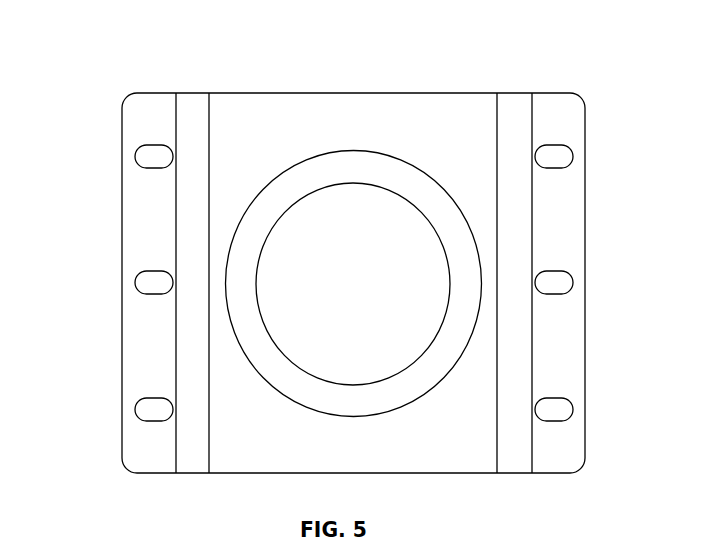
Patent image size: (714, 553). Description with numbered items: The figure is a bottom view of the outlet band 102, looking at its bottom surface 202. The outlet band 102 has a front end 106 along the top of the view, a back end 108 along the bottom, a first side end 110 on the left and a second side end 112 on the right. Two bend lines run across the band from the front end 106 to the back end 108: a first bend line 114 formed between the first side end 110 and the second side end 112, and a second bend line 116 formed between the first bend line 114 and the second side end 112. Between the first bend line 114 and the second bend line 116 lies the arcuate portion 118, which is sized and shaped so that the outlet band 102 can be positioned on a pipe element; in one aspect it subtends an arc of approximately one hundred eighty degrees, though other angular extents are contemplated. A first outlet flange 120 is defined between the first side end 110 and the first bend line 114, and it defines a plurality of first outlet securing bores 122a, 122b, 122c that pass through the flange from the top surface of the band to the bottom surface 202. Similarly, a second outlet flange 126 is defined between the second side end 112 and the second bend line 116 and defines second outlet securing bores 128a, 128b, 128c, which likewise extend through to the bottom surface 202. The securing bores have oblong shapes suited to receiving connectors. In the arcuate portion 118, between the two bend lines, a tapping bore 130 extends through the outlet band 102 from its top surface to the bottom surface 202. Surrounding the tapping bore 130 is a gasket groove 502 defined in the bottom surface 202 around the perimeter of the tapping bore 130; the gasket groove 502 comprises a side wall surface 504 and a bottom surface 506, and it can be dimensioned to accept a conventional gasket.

The outlet band 102 is at (188, 46).
The front end 106 is at (259, 93).
The back end 108 is at (450, 473).
The first side end 110 is at (122, 243).
The second side end 112 is at (585, 205).
The first bend line 114 is at (198, 110).
The second bend line 116 is at (508, 110).
The arcuate portion 118 is at (445, 93).
The first outlet flange 120 is at (130, 198).
The first outlet securing bore 122a is at (135, 153).
The first outlet securing bore 122b is at (135, 280).
The first outlet securing bore 122c is at (135, 408).
The second outlet flange 126 is at (577, 340).
The second outlet securing bore 128a is at (573, 155).
The second outlet securing bore 128b is at (573, 282).
The second outlet securing bore 128c is at (573, 408).
The tapping bore 130 is at (395, 375).
The bottom surface 202 is at (370, 93).
The gasket groove 502 is at (314, 157).
The side wall surface 504 is at (292, 160).
The bottom surface 506 is at (360, 162).